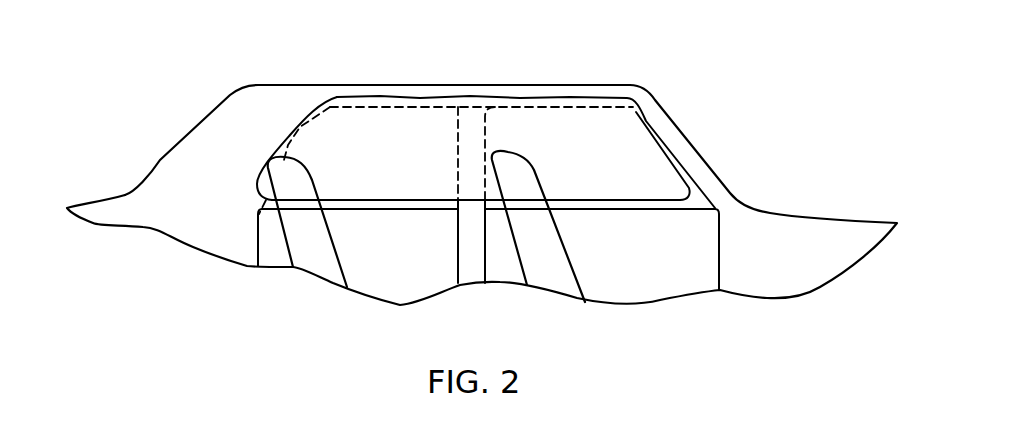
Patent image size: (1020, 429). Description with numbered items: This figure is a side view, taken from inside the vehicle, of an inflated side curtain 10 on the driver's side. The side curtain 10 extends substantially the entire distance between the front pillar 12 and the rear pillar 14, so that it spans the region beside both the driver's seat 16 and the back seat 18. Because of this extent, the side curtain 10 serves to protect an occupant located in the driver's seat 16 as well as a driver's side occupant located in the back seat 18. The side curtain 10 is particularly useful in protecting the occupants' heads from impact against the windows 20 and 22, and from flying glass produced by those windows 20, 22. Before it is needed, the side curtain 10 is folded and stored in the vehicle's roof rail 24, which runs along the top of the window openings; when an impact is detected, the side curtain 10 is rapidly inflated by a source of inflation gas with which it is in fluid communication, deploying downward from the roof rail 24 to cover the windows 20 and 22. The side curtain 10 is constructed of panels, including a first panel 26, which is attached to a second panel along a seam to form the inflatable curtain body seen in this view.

The side curtain 10 is at (579, 141).
The front pillar 12 is at (687, 148).
The rear pillar 14 is at (205, 138).
The driver's seat 16 is at (547, 192).
The back seat 18 is at (310, 182).
The window 20 is at (640, 137).
The window 22 is at (428, 133).
The roof rail 24 is at (380, 93).
The first panel 26 is at (533, 130).